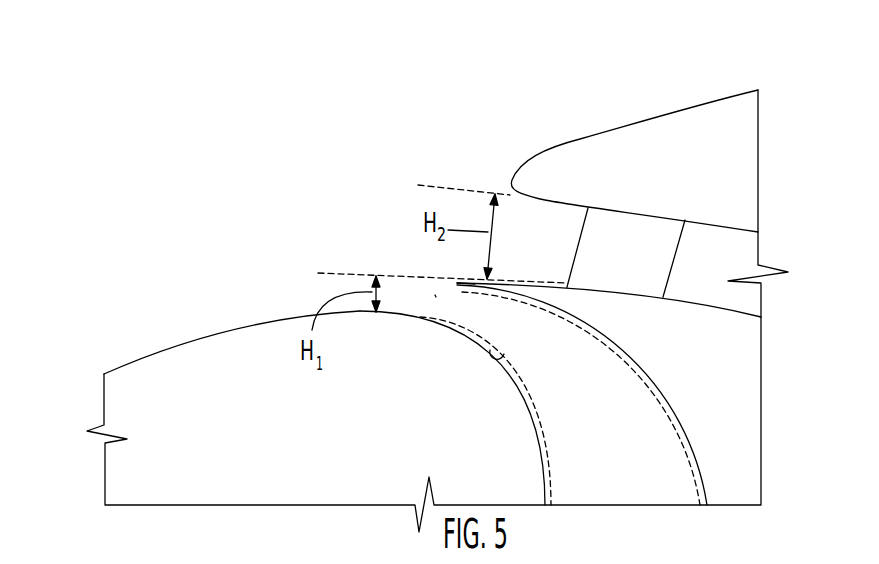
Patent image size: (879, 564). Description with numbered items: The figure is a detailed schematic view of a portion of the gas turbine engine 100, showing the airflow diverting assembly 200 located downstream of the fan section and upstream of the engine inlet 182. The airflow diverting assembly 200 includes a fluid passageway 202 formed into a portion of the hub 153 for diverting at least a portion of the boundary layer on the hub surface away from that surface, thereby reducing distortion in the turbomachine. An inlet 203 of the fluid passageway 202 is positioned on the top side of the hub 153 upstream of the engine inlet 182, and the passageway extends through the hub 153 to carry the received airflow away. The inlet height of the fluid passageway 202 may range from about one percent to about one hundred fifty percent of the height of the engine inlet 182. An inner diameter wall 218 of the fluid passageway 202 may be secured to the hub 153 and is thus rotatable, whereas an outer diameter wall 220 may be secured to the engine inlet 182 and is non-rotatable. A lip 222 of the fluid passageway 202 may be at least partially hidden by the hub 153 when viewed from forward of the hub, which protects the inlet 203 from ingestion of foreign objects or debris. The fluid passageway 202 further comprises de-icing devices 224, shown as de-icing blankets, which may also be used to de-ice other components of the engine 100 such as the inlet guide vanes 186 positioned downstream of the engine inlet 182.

The engine 100 is at (108, 137).
The hub 153 is at (171, 345).
The engine inlet 182 is at (372, 186).
The inlet guide vanes 186 is at (645, 265).
The airflow diverting assembly 200 is at (292, 294).
The fluid passageway 202 is at (547, 377).
The inlet 203 is at (435, 295).
The inner diameter wall 218 is at (490, 350).
The outer diameter wall 220 is at (645, 377).
The lip 222 is at (458, 283).
The de-icing devices 224 is at (682, 440).